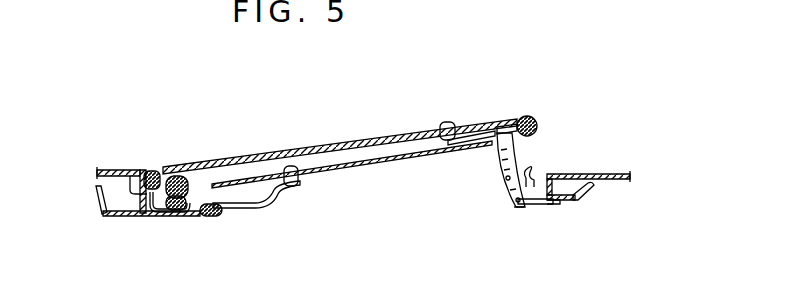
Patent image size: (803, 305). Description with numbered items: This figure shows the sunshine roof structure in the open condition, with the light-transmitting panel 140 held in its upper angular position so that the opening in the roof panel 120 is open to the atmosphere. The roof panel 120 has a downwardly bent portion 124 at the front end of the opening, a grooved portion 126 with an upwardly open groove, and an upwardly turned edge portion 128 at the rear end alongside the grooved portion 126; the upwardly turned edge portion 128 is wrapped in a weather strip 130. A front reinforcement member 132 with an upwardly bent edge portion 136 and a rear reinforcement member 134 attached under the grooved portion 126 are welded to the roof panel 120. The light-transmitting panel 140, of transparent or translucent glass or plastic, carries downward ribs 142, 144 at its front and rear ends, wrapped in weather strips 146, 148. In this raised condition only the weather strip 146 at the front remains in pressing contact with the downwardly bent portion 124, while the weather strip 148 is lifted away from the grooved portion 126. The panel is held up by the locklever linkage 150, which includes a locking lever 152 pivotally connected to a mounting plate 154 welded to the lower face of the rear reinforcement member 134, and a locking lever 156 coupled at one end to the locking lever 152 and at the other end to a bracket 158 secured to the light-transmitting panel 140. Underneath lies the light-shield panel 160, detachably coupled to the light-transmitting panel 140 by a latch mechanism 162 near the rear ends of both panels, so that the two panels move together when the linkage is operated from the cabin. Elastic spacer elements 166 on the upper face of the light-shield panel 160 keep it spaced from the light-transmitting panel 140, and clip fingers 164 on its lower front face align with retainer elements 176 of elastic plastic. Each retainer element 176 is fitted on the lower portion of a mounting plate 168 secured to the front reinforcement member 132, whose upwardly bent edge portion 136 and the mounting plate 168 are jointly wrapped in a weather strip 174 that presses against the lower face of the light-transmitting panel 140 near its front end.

The roof panel 120 is at (632, 175).
The downwardly bent portion 124 is at (133, 191).
The grooved portion 126 is at (570, 181).
The upwardly turned edge portion 128 is at (537, 205).
The weather strip 130 is at (529, 167).
The front reinforcement member 132 is at (122, 215).
The rear reinforcement member 134 is at (588, 191).
The upwardly bent edge portion 136 is at (158, 216).
The light-transmitting panel 140 is at (410, 131).
The rib 142 is at (175, 175).
The rib 144 is at (517, 125).
The weather strip 146 is at (153, 169).
The weather strip 148 is at (537, 118).
The locklever linkage 150 is at (513, 206).
The locking lever 152 is at (514, 216).
The mounting plate 154 is at (550, 207).
The locking lever 156 is at (512, 191).
The bracket 158 is at (493, 157).
The light-shield panel 160 is at (370, 161).
The latch mechanism 162 is at (470, 153).
The clip finger 164 is at (272, 191).
The elastic spacer element 166 is at (313, 172).
The mounting plate 168 is at (188, 214).
The weather strip 174 is at (193, 210).
The light-shield panel retainer element 176 is at (228, 214).